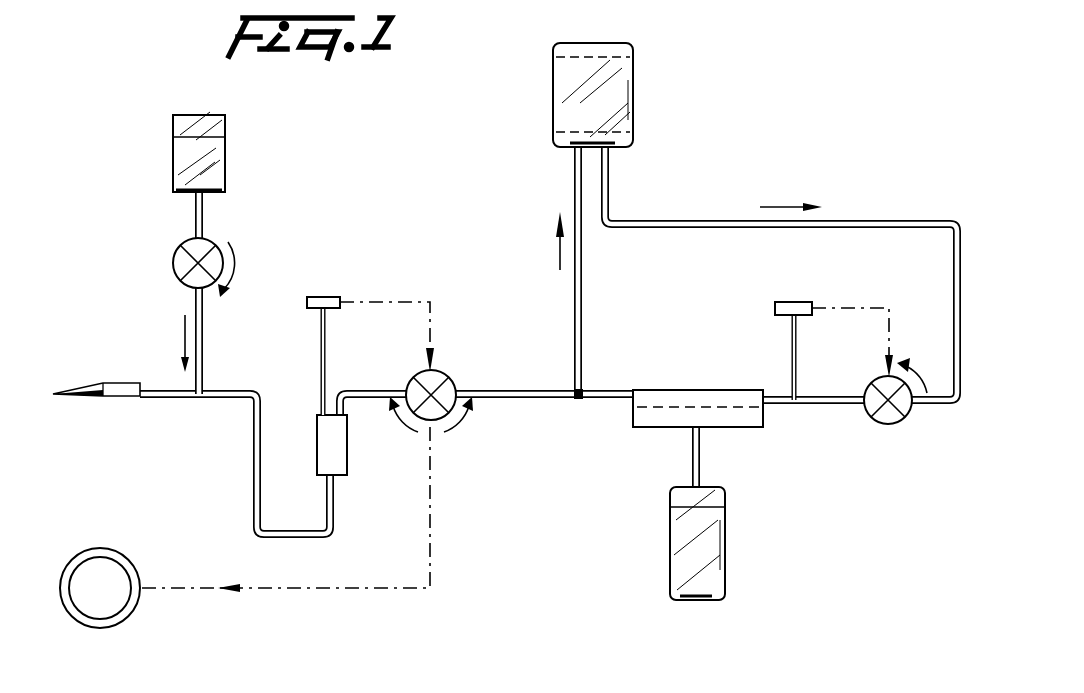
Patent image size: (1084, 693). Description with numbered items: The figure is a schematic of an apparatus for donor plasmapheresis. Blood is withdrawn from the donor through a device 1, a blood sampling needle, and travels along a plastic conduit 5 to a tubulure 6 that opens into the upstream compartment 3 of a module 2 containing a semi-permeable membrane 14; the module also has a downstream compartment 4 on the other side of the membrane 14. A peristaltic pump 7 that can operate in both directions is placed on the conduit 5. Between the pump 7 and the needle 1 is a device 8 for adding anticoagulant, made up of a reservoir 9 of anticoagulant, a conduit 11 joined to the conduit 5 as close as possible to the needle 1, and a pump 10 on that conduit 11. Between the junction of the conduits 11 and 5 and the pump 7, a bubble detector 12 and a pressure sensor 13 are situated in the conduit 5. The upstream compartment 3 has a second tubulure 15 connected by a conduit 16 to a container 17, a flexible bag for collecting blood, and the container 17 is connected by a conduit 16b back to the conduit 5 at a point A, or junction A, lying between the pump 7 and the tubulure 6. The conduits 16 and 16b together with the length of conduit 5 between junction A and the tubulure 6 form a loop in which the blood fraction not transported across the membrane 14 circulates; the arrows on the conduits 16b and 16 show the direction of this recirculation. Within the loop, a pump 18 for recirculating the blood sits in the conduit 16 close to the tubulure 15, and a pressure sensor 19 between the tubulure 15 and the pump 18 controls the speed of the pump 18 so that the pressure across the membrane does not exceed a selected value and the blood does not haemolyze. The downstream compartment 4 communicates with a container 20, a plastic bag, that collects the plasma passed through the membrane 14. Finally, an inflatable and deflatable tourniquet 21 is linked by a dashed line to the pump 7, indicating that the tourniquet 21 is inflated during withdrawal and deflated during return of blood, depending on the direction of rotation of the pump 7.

The device for withdrawal of blood 1 is at (105, 384).
The module containing a semi-permeable membrane 2 is at (622, 440).
The upstream compartment 3 is at (712, 395).
The downstream compartment 4 is at (727, 415).
The conduit 5 is at (252, 460).
The tubulure 6 is at (632, 392).
The pump 7 is at (455, 386).
The device for transferring anticoagulant 8 is at (170, 246).
The reservoir of anticoagulant 9 is at (225, 135).
The pump 10 is at (213, 243).
The conduit 11 is at (203, 358).
The bubble detector 12 is at (348, 455).
The pressure sensor 13 is at (330, 297).
The semi-permeable membrane 14 is at (670, 409).
The tubulure 15 is at (764, 404).
The conduit 16 is at (680, 222).
The conduit 16b is at (575, 311).
The container for collection of the blood 17 is at (560, 43).
The pump for recirculation of the blood 18 is at (898, 423).
The pressure sensor 19 is at (808, 302).
The container for collection of the plasma 20 is at (725, 546).
The tourniquet 21 is at (128, 615).
The junction A is at (577, 399).